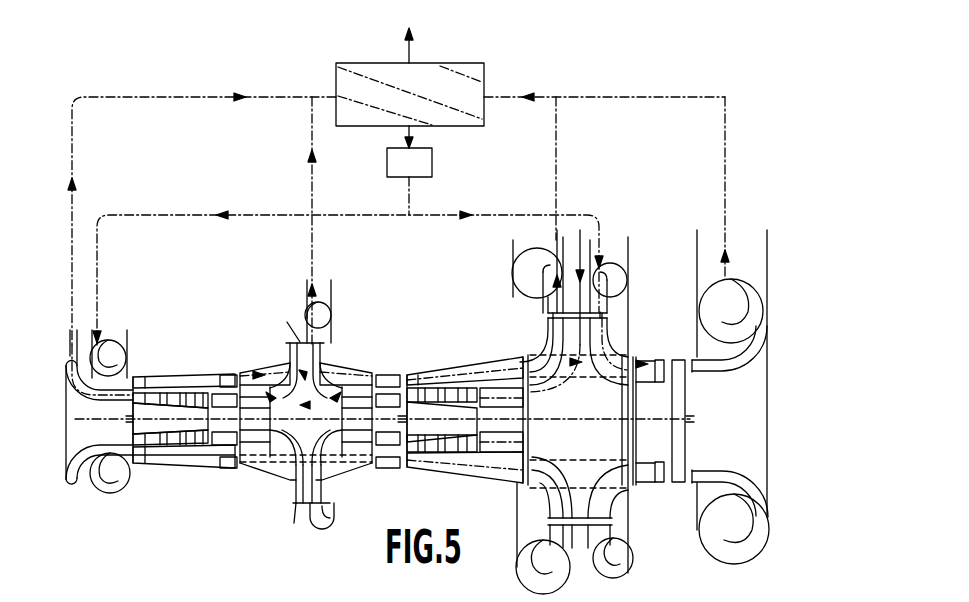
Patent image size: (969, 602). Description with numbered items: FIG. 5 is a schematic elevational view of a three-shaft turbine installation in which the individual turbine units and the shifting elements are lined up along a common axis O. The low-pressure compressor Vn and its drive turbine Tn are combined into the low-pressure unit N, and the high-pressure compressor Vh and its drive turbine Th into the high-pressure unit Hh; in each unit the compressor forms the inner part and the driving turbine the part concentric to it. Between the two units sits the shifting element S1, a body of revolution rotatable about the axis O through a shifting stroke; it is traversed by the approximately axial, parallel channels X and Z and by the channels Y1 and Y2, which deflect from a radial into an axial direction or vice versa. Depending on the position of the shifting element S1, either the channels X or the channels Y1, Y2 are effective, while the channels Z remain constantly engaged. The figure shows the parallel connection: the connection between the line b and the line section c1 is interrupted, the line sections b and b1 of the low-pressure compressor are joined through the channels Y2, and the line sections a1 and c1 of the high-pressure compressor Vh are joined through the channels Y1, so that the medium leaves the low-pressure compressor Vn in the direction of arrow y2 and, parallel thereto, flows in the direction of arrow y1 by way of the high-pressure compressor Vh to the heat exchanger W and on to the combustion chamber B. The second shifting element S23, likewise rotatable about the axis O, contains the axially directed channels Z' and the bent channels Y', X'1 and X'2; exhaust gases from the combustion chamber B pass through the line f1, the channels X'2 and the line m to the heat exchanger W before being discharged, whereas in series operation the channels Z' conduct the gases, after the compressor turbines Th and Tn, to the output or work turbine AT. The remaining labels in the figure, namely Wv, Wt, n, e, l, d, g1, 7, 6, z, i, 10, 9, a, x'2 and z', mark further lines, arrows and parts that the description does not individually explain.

The heat exchanger W is at (410, 94).
The controller input Wv is at (340, 80).
The controller input Wt is at (477, 74).
The speed output n is at (410, 44).
The control signal e is at (405, 129).
The combustion chamber B is at (432, 152).
The line m is at (540, 95).
The control line l is at (644, 96).
The control line d is at (70, 196).
The line f1 is at (426, 216).
The control line g1 is at (98, 258).
The line section b1 is at (321, 298).
The axis O is at (416, 420).
The high-pressure compressor Vh is at (172, 432).
The high-pressure unit Hh is at (167, 370).
The high-pressure compressor drive turbine Th is at (140, 375).
The line section c1 is at (225, 448).
The bearing 7 is at (227, 372).
The seal 6 is at (306, 419).
The channels X is at (306, 411).
The shifting element S1 is at (332, 478).
The arrow y1 is at (290, 422).
The arrow y2 is at (328, 422).
The flow z is at (252, 363).
The line section a1 is at (300, 346).
The channels Y1 is at (284, 392).
The channels Y2 is at (340, 392).
The channels Z is at (343, 347).
The line b is at (384, 447).
The low-pressure unit N is at (452, 370).
The low-pressure compressor drive turbine Tn is at (416, 378).
The inlet i is at (481, 370).
The flow 10 is at (493, 382).
The rotor 9 is at (591, 394).
The low-pressure compressor Vn is at (447, 432).
The rotor a is at (500, 446).
The shifting element S23 is at (540, 488).
The channels X'1 is at (514, 334).
The channels X'2 is at (630, 316).
The flow path x'2 is at (635, 331).
The flow z' is at (585, 359).
The channels Z' is at (643, 379).
The channels Y' is at (569, 426).
The output or work turbine AT is at (679, 484).